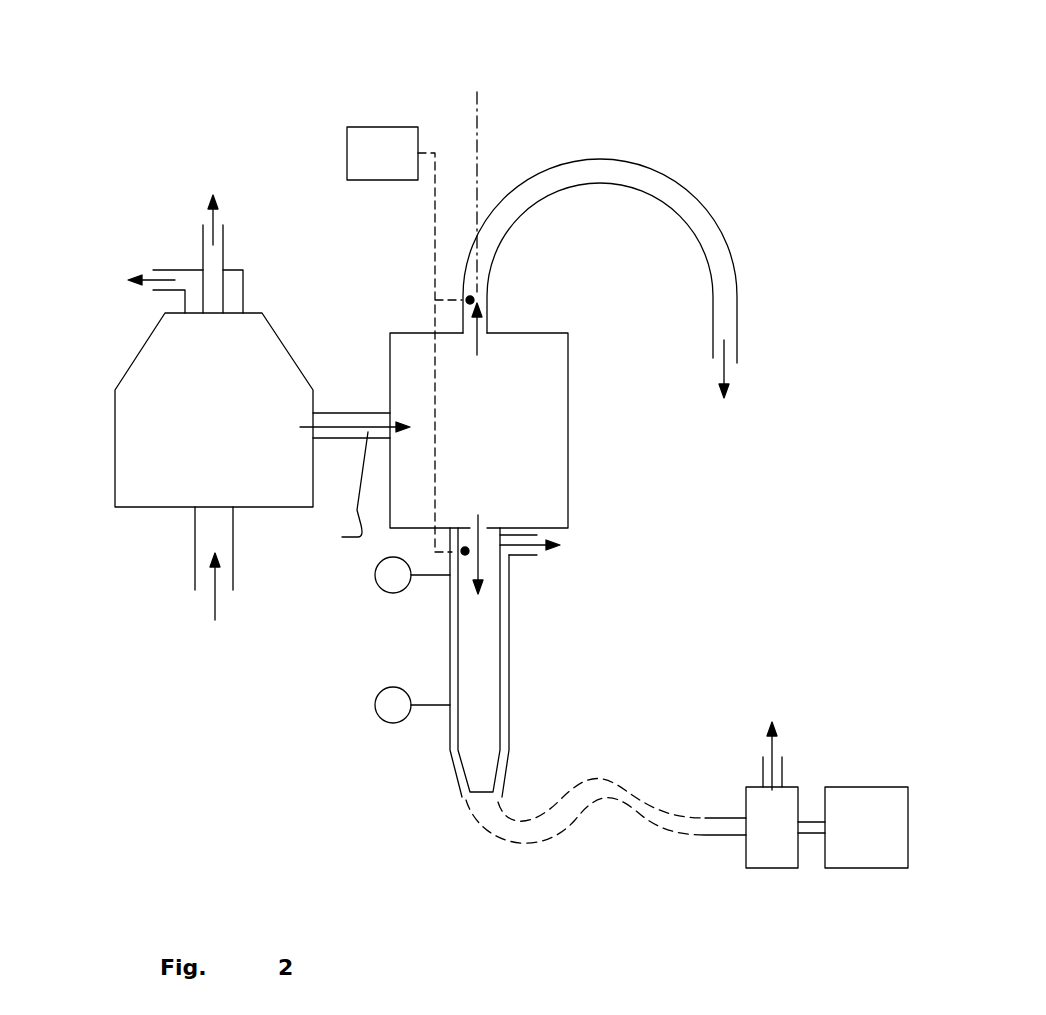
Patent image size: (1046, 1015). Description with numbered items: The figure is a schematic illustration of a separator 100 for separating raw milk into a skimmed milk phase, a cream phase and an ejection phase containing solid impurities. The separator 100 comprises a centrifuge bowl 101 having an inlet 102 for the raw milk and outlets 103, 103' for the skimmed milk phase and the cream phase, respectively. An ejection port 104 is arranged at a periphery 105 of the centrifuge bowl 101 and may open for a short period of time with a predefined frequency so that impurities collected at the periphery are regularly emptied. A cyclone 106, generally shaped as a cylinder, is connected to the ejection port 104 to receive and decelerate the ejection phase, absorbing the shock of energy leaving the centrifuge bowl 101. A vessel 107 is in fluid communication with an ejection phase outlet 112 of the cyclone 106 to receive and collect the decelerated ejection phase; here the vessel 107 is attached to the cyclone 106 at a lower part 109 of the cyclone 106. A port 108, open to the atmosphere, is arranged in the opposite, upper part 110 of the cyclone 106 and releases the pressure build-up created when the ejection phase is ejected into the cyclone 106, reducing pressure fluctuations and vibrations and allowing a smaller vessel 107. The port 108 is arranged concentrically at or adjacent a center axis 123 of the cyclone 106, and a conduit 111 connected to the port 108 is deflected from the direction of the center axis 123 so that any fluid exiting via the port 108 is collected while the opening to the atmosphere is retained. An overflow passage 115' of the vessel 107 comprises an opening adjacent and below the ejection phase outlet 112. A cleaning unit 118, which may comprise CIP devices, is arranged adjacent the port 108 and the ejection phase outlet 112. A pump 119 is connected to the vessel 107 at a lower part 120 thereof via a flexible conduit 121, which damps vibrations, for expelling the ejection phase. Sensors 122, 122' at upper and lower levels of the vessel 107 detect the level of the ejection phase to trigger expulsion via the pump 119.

The separator 100 is at (190, 52).
The centrifuge bowl 101 is at (130, 362).
The inlet 102 is at (195, 548).
The outlet 103 is at (144, 264).
The outlet 103' is at (131, 225).
The ejection port 104 is at (313, 413).
The periphery 105 is at (313, 458).
The cyclone 106 is at (408, 333).
The vessel 107 is at (509, 700).
The port 108 is at (493, 358).
The lower part 109 is at (586, 533).
The upper part 110 is at (585, 360).
The conduit 111 is at (670, 180).
The ejection phase outlet 112 is at (495, 520).
The overflow passage 115' is at (576, 576).
The cleaning unit 118 is at (410, 341).
The pump 119 is at (795, 787).
The lower part 120 is at (428, 806).
The flexible conduit 121 is at (535, 845).
The sensor 122 is at (366, 597).
The sensor 122' is at (364, 727).
The center axis 123 is at (478, 110).